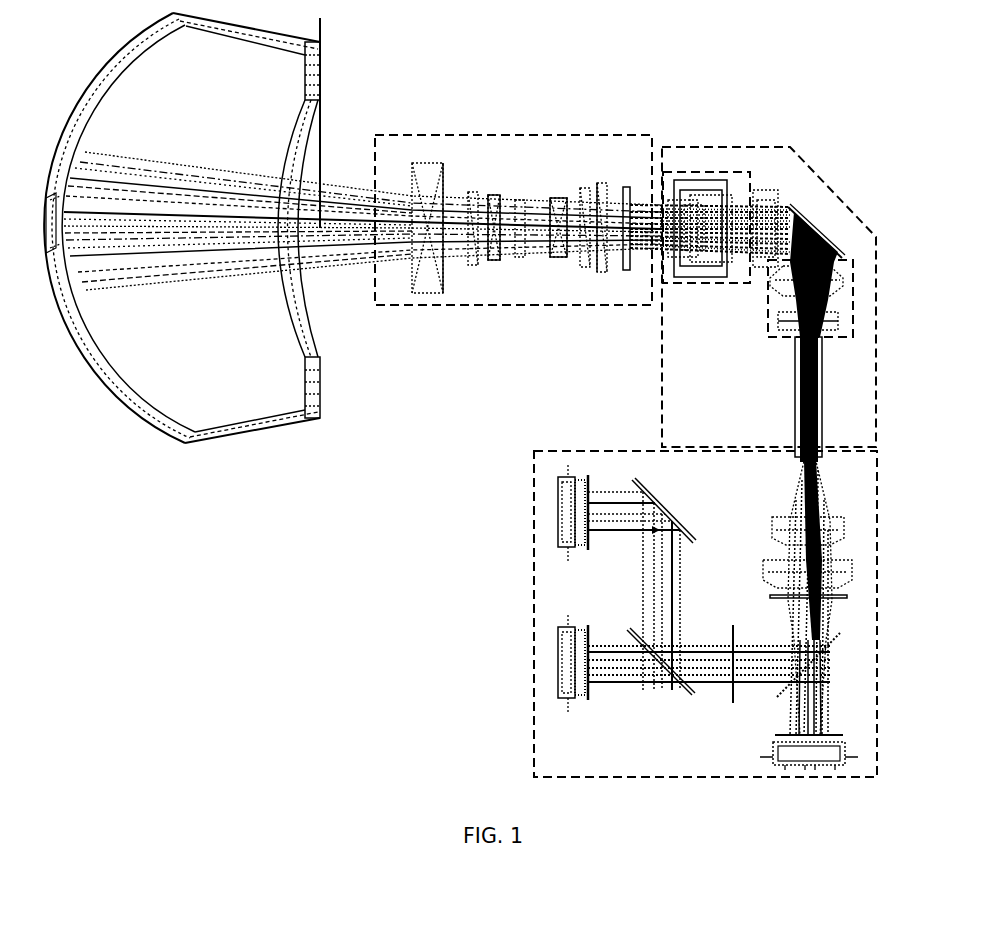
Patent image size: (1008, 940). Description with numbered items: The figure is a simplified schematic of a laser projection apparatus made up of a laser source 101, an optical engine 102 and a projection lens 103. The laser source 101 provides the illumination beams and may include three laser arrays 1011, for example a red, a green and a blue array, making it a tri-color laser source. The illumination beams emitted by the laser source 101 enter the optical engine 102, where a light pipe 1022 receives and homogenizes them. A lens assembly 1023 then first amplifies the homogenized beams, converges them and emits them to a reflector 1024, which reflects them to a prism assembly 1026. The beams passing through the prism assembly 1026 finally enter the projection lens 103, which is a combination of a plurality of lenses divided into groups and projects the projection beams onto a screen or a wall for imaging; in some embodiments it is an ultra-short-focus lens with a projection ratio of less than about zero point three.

The laser source 101 is at (652, 614).
The laser arrays 1011 is at (558, 682).
The optical engine 102 is at (786, 271).
The light pipe 1022 is at (822, 392).
The lens assembly 1023 is at (853, 290).
The reflector 1024 is at (793, 208).
The prism assembly 1026 is at (678, 170).
The projection lens 103 is at (545, 135).